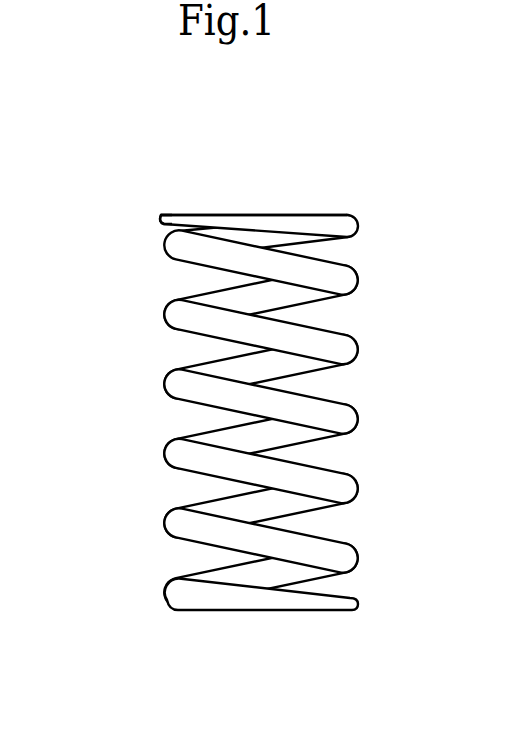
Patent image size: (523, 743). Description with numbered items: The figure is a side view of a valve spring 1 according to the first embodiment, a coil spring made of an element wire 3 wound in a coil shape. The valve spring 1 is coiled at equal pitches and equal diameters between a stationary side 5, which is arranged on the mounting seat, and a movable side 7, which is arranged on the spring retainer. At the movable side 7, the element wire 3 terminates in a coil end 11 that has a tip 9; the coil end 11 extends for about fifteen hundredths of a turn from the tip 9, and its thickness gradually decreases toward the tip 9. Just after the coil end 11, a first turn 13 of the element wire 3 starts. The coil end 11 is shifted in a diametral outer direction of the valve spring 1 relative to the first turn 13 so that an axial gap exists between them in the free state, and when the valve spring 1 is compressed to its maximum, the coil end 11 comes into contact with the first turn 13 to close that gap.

The valve spring 1 is at (253, 408).
The element wire 3 is at (350, 347).
The stationary side 5 is at (223, 612).
The movable side 7 is at (232, 181).
The tip 9 is at (160, 216).
The coil end 11 is at (218, 216).
The first turn 13 is at (167, 245).